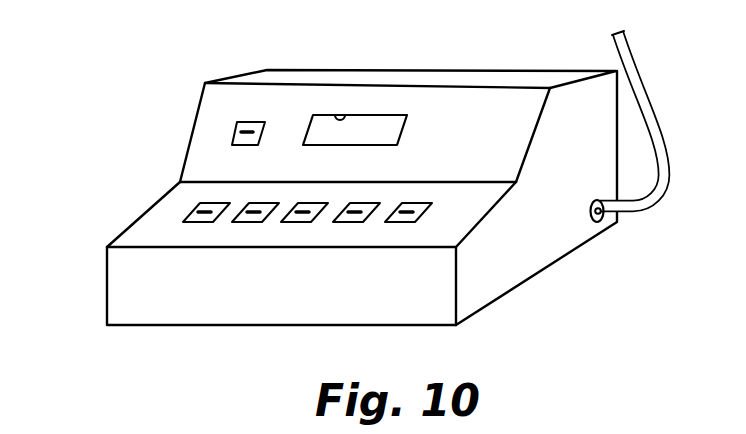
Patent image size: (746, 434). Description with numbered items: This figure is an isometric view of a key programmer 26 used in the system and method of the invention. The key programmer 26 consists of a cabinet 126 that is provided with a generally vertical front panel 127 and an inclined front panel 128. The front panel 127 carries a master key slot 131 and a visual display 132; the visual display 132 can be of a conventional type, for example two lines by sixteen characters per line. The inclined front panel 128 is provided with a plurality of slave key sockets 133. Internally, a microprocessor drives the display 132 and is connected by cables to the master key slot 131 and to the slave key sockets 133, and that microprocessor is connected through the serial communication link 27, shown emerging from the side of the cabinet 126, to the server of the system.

The key programmer 26 is at (379, 171).
The serial communication link 27 is at (638, 63).
The cabinet 126 is at (617, 120).
The front panel 127 is at (493, 112).
The inclined front panel 128 is at (137, 232).
The master key slot 131 is at (242, 121).
The visual display 132 is at (345, 115).
The slave key sockets 133 is at (195, 215).